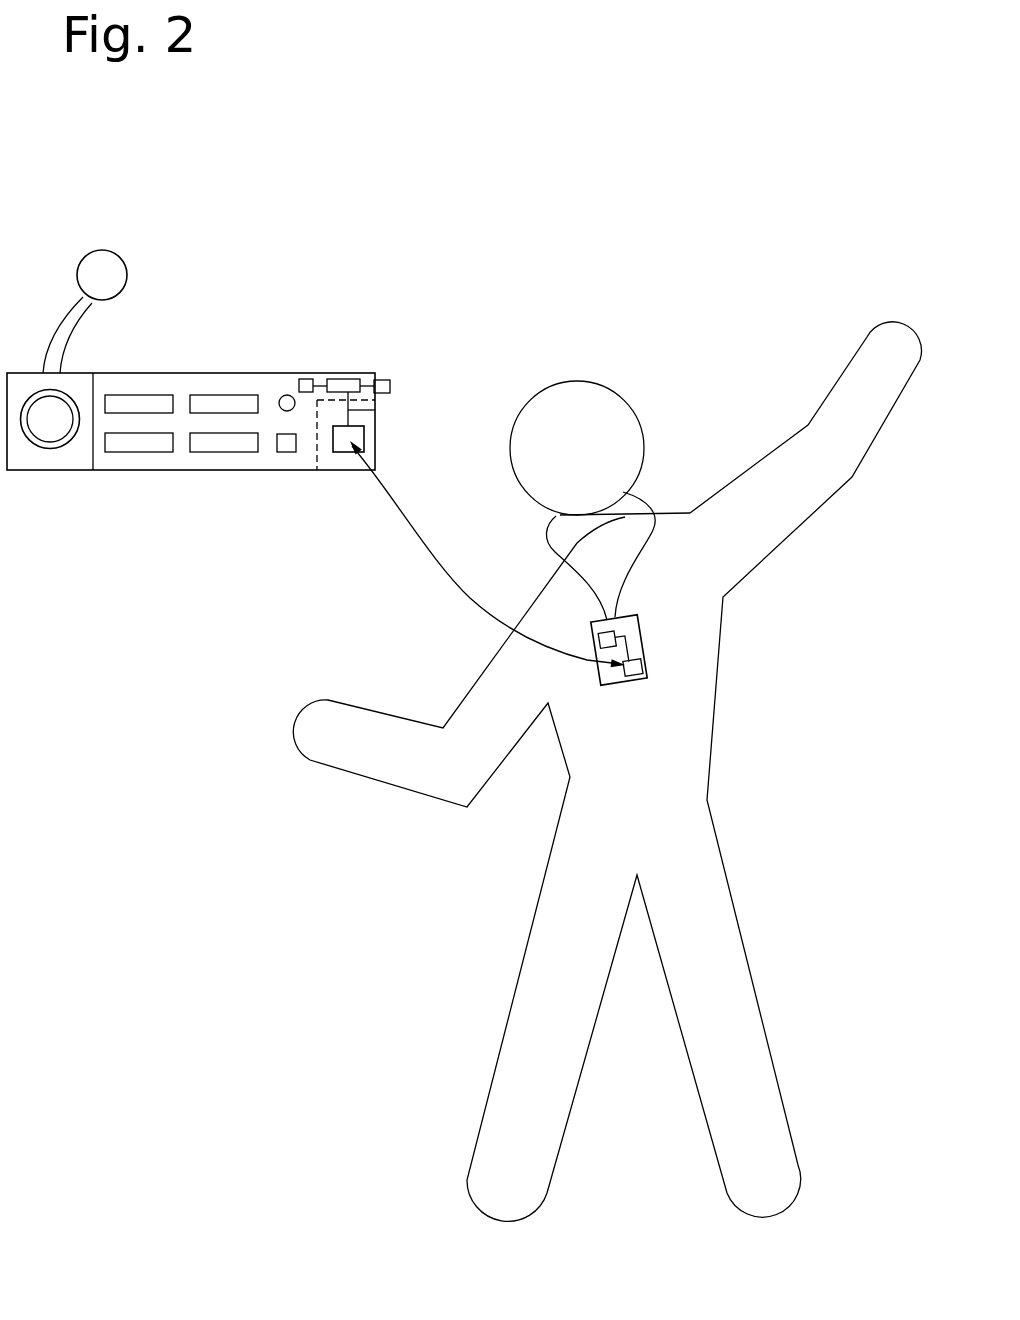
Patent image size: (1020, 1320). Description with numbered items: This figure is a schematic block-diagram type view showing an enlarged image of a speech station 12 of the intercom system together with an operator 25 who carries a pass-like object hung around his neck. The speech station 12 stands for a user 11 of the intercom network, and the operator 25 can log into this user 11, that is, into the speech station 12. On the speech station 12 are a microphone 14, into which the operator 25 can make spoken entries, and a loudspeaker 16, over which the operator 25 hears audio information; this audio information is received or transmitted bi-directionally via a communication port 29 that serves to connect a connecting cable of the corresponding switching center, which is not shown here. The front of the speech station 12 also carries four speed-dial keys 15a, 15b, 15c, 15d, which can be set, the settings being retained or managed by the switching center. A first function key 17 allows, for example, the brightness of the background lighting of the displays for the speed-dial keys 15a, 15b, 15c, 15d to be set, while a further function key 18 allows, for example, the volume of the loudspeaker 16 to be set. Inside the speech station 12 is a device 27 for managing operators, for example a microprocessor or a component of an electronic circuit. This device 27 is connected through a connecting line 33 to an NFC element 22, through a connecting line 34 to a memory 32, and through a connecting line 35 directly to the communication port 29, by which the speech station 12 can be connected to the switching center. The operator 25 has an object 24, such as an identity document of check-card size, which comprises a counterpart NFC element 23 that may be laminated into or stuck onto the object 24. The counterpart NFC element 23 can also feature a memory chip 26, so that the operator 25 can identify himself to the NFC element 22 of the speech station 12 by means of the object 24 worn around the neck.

The user 11 is at (172, 532).
The speech station 12 is at (193, 265).
The microphone 14 is at (63, 325).
The speed-dial key 15a is at (138, 403).
The speed-dial key 15b is at (230, 403).
The speed-dial key 15c is at (134, 443).
The speed-dial key 15d is at (215, 443).
The loudspeaker 16 is at (50, 421).
The first function key 17 is at (287, 394).
The function key 18 is at (287, 445).
The NFC element 22 is at (357, 438).
The counterpart NFC element 23 is at (647, 668).
The object 24 is at (628, 628).
The operator 25 is at (660, 752).
The memory chip 26 is at (592, 632).
The device for managing operators 27 is at (342, 379).
The communication port 29 is at (390, 383).
The memory 32 is at (306, 379).
The connecting line 33 is at (375, 410).
The connecting line 34 is at (321, 385).
The connecting line 35 is at (369, 385).